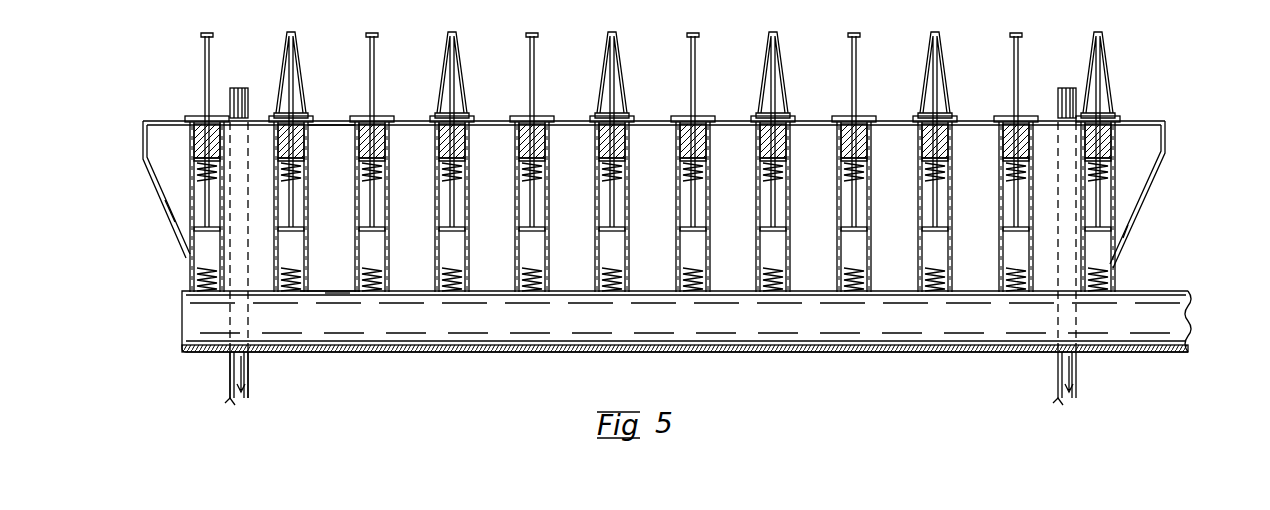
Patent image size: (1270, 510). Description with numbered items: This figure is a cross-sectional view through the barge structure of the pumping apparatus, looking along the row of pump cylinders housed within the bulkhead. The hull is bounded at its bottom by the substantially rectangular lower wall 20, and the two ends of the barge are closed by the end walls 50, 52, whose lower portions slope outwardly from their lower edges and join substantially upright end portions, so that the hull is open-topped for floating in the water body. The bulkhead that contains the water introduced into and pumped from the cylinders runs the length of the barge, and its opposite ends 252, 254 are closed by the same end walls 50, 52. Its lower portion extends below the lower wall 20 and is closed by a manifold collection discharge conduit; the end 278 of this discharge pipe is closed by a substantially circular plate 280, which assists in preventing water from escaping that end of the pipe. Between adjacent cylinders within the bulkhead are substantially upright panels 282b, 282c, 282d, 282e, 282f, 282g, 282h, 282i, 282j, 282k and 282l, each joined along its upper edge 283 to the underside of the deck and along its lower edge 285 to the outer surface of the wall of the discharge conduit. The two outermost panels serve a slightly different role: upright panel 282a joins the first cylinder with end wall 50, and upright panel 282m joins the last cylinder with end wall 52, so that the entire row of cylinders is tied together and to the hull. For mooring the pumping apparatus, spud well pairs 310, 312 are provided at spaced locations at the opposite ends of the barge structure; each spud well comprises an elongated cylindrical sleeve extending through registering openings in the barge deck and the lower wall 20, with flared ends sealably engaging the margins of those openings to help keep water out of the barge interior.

The lower wall 20 is at (322, 288).
The end wall 50 is at (150, 167).
The end wall 52 is at (1138, 213).
The end of the bulkhead 252 is at (172, 188).
The end of the bulkhead 254 is at (1133, 180).
The end of discharge pipe 278 is at (205, 350).
The circular plate 280 is at (182, 322).
The upright panel 282a is at (167, 148).
The upright panel 282b is at (257, 158).
The upright panel 282c is at (322, 140).
The upright panel 282d is at (402, 138).
The upright panel 282e is at (487, 140).
The upright panel 282f is at (562, 138).
The upright panel 282g is at (647, 140).
The upright panel 282h is at (727, 140).
The upright panel 282i is at (809, 140).
The upright panel 282j is at (888, 140).
The upright panel 282k is at (972, 140).
The upright panel 282l is at (1047, 135).
The upright panel 282m is at (1145, 143).
The upper edge of upright panel 283 is at (336, 148).
The lower edge of upright panel 285 is at (333, 293).
The spud well pair 310 is at (247, 247).
The spud well pair 312 is at (1057, 260).